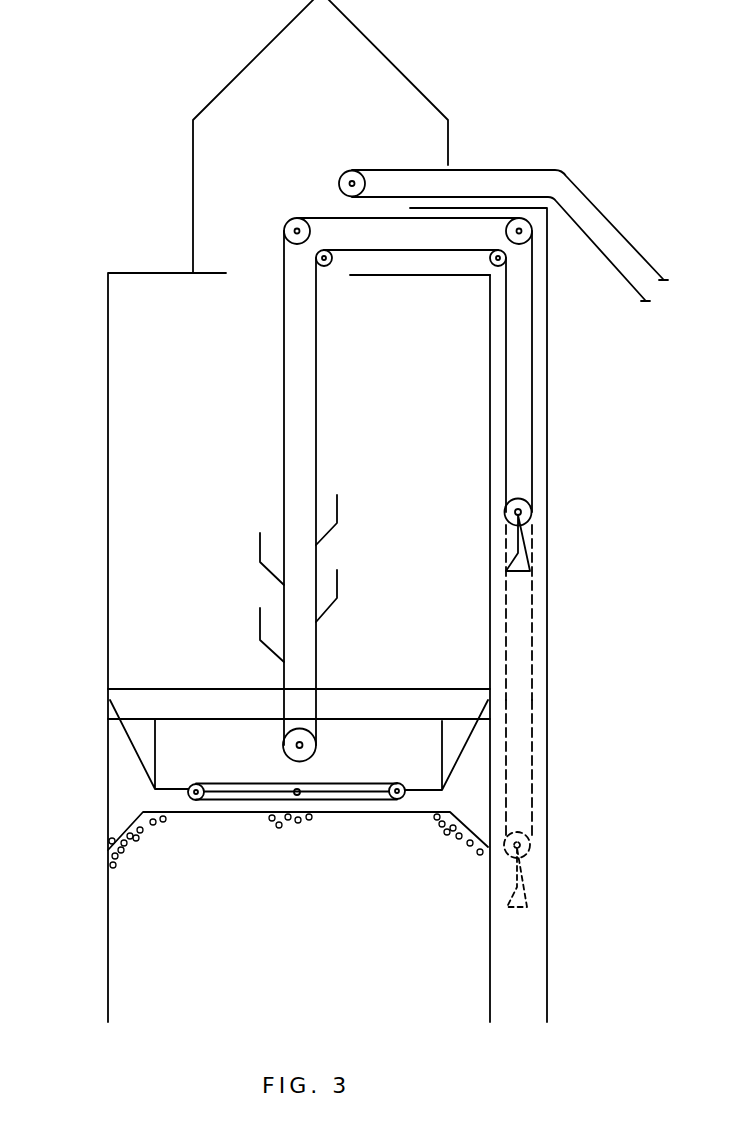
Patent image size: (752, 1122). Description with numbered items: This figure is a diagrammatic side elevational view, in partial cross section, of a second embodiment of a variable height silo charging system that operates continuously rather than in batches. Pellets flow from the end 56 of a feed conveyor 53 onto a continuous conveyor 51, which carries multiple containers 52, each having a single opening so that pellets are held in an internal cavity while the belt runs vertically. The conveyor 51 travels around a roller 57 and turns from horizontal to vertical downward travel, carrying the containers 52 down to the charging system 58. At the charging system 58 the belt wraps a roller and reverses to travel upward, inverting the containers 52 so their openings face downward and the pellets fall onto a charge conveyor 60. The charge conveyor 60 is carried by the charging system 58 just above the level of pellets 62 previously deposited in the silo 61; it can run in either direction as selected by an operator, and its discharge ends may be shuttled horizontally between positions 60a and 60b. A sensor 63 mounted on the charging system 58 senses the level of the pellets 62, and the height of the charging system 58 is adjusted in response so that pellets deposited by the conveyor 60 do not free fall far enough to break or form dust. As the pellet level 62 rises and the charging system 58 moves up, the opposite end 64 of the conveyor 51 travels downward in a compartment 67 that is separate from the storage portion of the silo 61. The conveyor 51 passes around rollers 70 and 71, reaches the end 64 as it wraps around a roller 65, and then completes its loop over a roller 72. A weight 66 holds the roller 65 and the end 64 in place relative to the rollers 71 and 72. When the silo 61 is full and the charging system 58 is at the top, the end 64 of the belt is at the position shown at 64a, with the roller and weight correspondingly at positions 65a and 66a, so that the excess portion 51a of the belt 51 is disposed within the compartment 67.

The conveyor 51 is at (317, 440).
The excess portion of belt 51a is at (532, 718).
The container 52 is at (258, 548).
The conveyor 53 is at (607, 213).
The end of conveyor 56 is at (350, 170).
The roller 57 is at (291, 222).
The charging system 58 is at (189, 689).
The charge conveyor 60 is at (327, 782).
The discharge end position 60a is at (150, 811).
The discharge end position 60b is at (483, 813).
The silo 61 is at (108, 553).
The pellets 62 is at (313, 861).
The sensor 63 is at (298, 796).
The opposite end of conveyor 64 is at (528, 505).
The position of end of belt 64a is at (530, 840).
The roller 65 is at (520, 512).
The roller position 65a is at (530, 847).
The weight 66 is at (522, 562).
The weight position 66a is at (530, 900).
The compartment 67 is at (515, 630).
The roller 70 is at (329, 264).
The roller 71 is at (494, 269).
The roller 72 is at (526, 238).